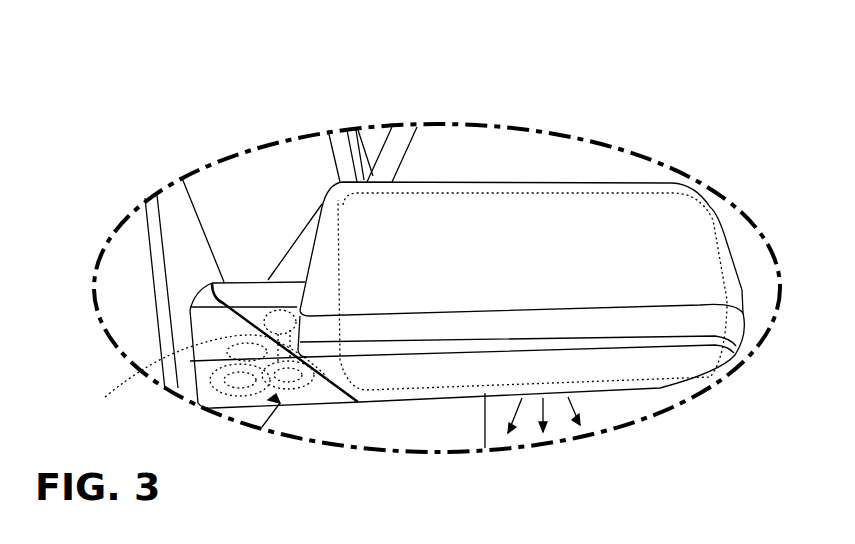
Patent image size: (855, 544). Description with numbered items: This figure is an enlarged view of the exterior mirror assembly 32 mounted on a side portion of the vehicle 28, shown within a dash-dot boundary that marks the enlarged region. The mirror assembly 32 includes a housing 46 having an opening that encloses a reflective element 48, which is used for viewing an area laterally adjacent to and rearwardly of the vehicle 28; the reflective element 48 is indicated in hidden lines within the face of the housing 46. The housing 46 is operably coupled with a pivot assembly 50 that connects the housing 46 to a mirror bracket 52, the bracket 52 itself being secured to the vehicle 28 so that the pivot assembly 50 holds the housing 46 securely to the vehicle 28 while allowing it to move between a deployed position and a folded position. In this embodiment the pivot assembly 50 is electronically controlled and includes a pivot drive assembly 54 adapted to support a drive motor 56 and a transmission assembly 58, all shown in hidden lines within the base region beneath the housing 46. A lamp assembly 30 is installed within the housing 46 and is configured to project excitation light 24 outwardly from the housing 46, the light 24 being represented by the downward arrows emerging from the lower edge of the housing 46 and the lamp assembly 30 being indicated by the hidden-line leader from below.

The excitation light 24 is at (567, 398).
The vehicle 28 is at (128, 249).
The lamp assembly 30 is at (497, 378).
The exterior mirror assembly 32 is at (713, 210).
The housing 46 is at (434, 227).
The reflective element 48 is at (537, 193).
The pivot assembly 50 is at (202, 379).
The mirror bracket 52 is at (210, 324).
The pivot drive assembly 54 is at (290, 385).
The drive motor 56 is at (218, 398).
The transmission assembly 58 is at (332, 368).